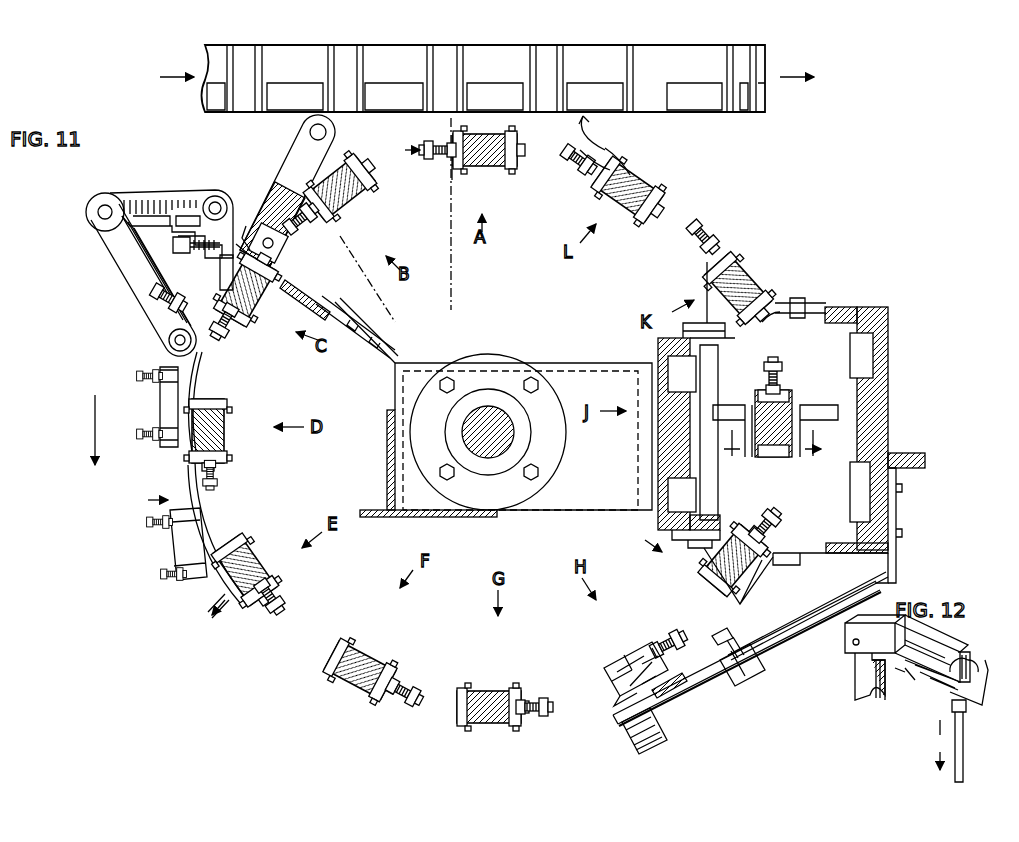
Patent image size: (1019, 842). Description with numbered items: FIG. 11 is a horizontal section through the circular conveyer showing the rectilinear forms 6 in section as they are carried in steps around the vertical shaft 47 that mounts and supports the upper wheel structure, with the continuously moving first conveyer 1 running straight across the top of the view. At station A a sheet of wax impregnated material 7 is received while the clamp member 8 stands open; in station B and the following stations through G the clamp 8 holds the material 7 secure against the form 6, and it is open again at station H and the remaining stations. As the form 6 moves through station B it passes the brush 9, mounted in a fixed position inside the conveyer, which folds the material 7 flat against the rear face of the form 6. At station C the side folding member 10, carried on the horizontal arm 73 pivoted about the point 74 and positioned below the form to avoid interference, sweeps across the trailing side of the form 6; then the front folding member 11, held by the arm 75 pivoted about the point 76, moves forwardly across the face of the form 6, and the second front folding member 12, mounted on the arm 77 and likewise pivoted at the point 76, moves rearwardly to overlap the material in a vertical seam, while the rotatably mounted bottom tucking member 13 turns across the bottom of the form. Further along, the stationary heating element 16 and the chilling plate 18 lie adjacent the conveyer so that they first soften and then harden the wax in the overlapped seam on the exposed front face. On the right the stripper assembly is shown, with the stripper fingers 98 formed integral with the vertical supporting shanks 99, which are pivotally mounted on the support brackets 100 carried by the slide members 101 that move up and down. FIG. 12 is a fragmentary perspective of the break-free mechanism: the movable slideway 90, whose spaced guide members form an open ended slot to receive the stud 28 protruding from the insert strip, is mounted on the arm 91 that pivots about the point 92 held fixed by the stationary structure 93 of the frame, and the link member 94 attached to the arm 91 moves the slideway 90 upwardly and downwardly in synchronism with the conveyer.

In FIG. 11, the first conveyer 1 is at (403, 50).
In FIG. 11, the rectilinear form 6 is at (362, 190).
In FIG. 11, the wax impregnated material 7 is at (342, 244).
In FIG. 11, the clamp member 8 is at (306, 226).
In FIG. 11, the brush 9 is at (290, 286).
In FIG. 11, the side folding member 10 is at (258, 238).
In FIG. 11, the front folding member 11 is at (222, 270).
In FIG. 11, the front folding member 12 is at (205, 298).
In FIG. 11, the bottom tucking member 13 is at (772, 458).
In FIG. 11, the heating element 16 is at (200, 380).
In FIG. 11, the chilling plate 18 is at (200, 516).
In FIG. 11, the stud 28 is at (672, 690).
In FIG. 12, the stud 28 is at (900, 675).
In FIG. 11, the vertical shaft 47 is at (488, 418).
In FIG. 11, the arm 73 is at (280, 190).
In FIG. 11, the pivot point 74 is at (308, 136).
In FIG. 11, the arm 75 is at (160, 195).
In FIG. 11, the pivot point 76 is at (110, 192).
In FIG. 11, the arm 77 is at (140, 262).
In FIG. 11, the movable slideway 90 is at (632, 692).
In FIG. 12, the movable slideway 90 is at (928, 690).
In FIG. 11, the arm 91 is at (706, 690).
In FIG. 12, the arm 91 is at (880, 655).
In FIG. 11, the pivot point 92 is at (750, 668).
In FIG. 12, the pivot point 92 is at (846, 648).
In FIG. 11, the stationary structure 93 is at (770, 648).
In FIG. 12, the stationary structure 93 is at (862, 697).
In FIG. 11, the link member 94 is at (660, 744).
In FIG. 12, the link member 94 is at (955, 774).
In FIG. 11, the stripper fingers 98 is at (742, 406).
In FIG. 11, the vertical supporting shanks 99 is at (810, 408).
In FIG. 11, the support brackets 100 is at (832, 400).
In FIG. 11, the slide members 101 is at (660, 430).